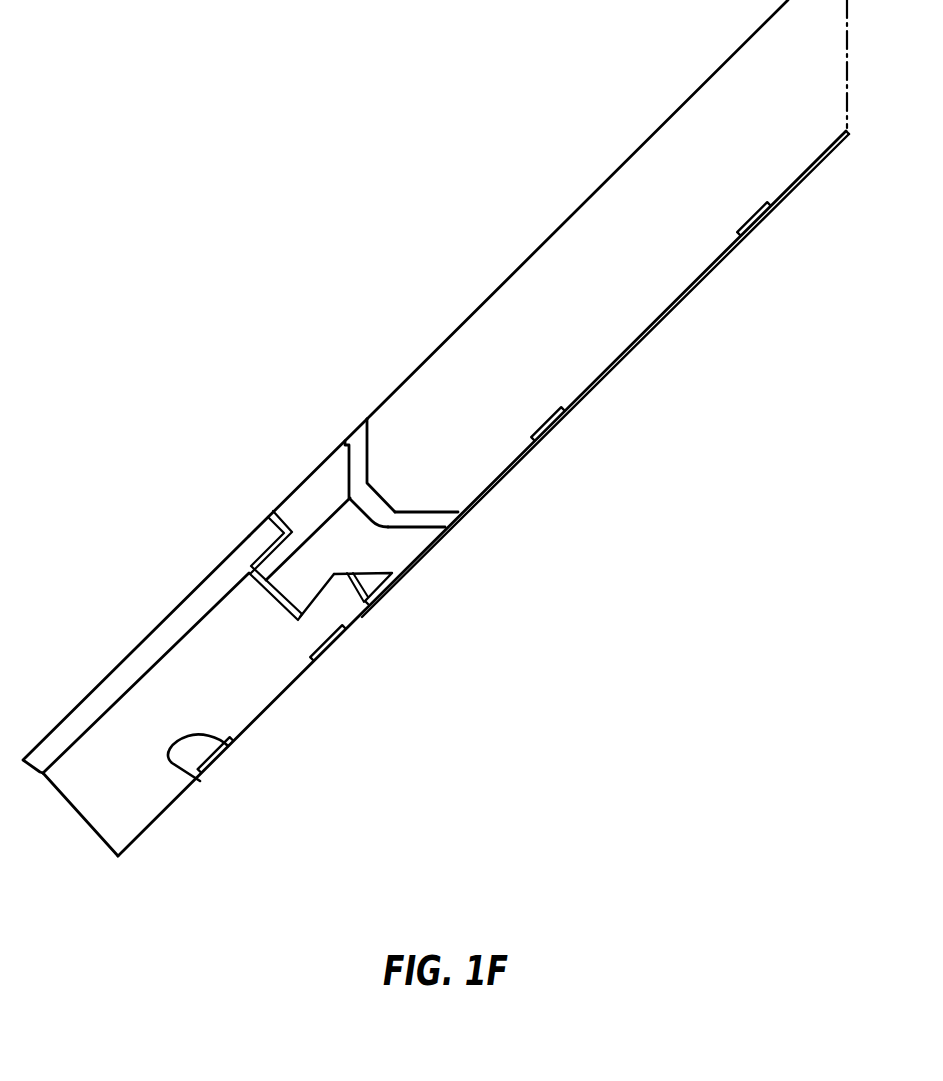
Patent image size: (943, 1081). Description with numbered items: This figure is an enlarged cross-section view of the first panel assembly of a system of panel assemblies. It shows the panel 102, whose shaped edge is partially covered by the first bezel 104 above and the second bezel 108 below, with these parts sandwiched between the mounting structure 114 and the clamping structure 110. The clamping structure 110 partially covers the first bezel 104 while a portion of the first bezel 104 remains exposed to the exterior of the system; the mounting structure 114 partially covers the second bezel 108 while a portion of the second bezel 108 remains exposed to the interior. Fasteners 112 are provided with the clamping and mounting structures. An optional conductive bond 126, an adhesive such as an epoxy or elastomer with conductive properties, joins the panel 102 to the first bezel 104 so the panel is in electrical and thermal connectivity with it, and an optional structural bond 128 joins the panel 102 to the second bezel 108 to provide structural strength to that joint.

The first panel 102 is at (565, 253).
The first bezel 104 is at (317, 490).
The second bezel 108 is at (392, 560).
The clamping structure 110 is at (165, 630).
The fasteners 112 is at (207, 757).
The mounting structure 114 is at (268, 682).
The conductive bond 126 is at (358, 440).
The structural bond 128 is at (438, 522).